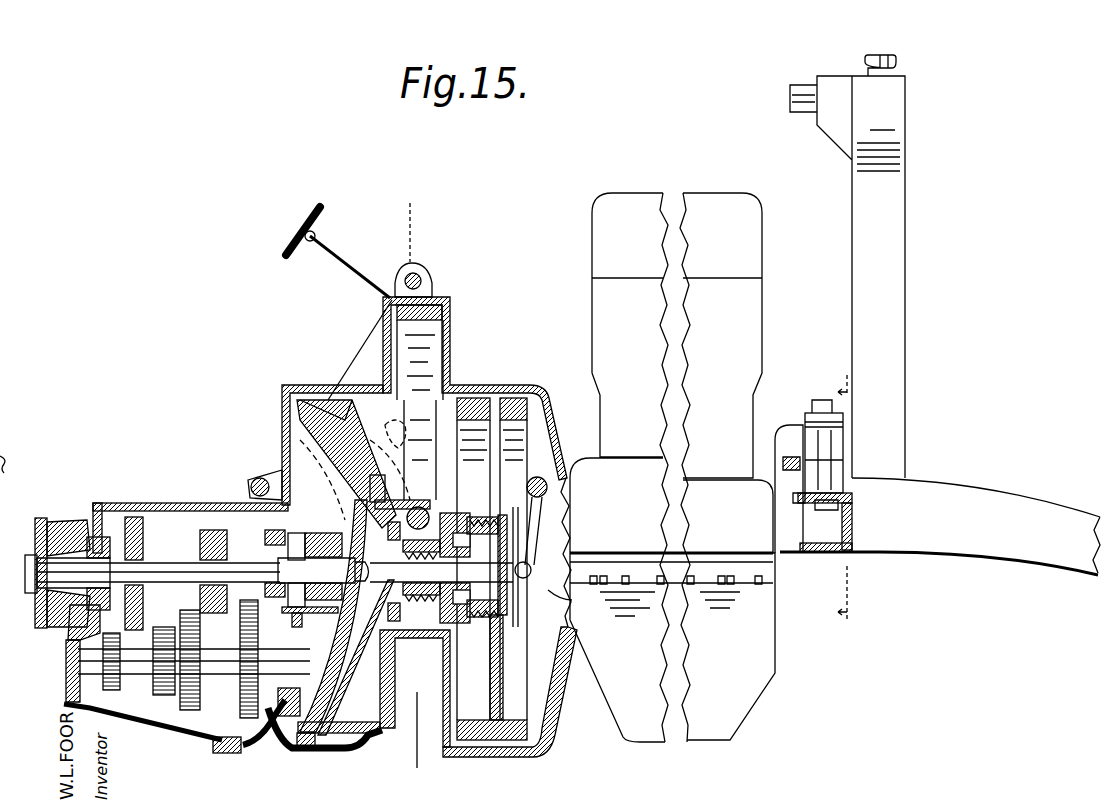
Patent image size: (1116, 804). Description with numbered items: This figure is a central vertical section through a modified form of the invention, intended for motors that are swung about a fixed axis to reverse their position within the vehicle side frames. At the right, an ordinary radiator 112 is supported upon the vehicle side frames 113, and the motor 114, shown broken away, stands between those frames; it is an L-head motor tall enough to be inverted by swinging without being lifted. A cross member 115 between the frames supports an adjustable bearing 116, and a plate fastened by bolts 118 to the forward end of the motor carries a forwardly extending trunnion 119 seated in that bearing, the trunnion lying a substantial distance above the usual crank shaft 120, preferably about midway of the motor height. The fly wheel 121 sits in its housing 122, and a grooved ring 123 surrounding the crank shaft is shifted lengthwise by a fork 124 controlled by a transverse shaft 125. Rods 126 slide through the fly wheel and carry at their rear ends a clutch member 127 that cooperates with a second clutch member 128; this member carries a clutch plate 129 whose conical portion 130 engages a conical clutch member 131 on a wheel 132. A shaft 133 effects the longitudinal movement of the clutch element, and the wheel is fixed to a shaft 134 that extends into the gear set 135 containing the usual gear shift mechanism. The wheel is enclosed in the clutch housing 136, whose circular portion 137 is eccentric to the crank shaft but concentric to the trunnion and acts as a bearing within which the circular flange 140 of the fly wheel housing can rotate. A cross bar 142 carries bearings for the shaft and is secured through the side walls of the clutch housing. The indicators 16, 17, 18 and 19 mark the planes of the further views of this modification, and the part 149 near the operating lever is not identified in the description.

The section line 16- 16 is at (416, 486).
The section line 17- 17 is at (839, 501).
The operating lever 18 is at (353, 464).
The shifting fork 19 is at (426, 484).
The radiator 112 is at (905, 424).
The vehicle side frames 113 is at (946, 490).
The motor 114 is at (627, 200).
The cross member 115 is at (834, 560).
The adjustable bearing 116 is at (804, 412).
The bolts 118 is at (808, 553).
The trunnion 119 is at (790, 435).
The crank shaft 120 is at (548, 563).
The fly wheel 121 is at (506, 400).
The fly wheel housing 122 is at (495, 380).
The grooved ring 123 is at (560, 606).
The fork 124 is at (560, 462).
The transverse shaft 125 is at (556, 430).
The rods 126 is at (478, 514).
The clutch member 127 is at (471, 605).
The clutch member 128 is at (425, 648).
The clutch plate 129 is at (363, 660).
The conical portion 130 is at (368, 736).
The conical clutch member 131 is at (343, 752).
The wheel 132 is at (342, 648).
The shaft 133 is at (455, 500).
The shaft 134 is at (255, 503).
The gear set 135 is at (154, 502).
The clutch housing 136 is at (320, 380).
The circular portion 137 is at (440, 292).
The circular flange 140 is at (450, 318).
The cross bar 142 is at (428, 500).
The pivot 149 is at (398, 426).